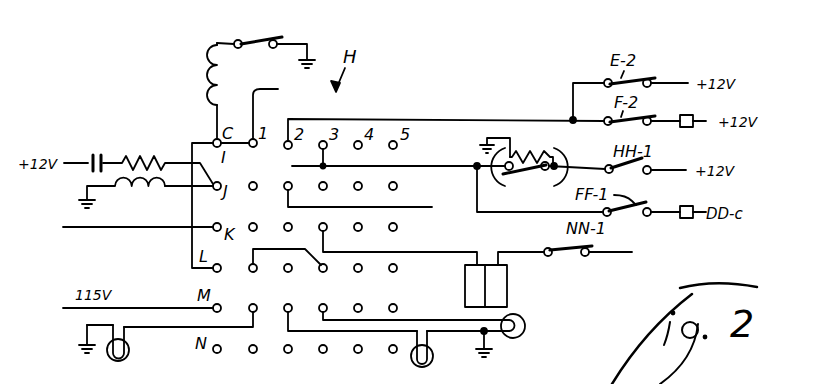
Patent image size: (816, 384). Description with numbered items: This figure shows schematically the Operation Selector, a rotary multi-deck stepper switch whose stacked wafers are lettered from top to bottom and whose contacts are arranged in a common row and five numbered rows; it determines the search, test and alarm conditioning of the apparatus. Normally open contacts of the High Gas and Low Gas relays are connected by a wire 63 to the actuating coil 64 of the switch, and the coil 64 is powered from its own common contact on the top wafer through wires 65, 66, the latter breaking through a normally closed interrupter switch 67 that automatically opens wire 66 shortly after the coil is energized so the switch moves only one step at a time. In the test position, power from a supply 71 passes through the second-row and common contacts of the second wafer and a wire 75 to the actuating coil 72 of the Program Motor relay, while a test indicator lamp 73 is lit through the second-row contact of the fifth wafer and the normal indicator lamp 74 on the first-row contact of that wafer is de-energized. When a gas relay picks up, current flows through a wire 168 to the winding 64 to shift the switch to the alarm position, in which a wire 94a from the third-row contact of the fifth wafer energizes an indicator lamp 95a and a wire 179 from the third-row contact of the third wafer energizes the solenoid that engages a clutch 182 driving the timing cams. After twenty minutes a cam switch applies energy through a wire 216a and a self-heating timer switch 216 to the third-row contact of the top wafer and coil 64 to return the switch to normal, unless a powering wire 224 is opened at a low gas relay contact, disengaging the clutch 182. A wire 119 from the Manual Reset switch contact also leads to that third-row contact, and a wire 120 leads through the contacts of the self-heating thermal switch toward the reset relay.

The wire 63 is at (279, 109).
The actuating coil 64 is at (210, 72).
The wire 65 is at (210, 105).
The circuit wire 66 is at (218, 43).
The interrupter switch 67 is at (253, 50).
The supply 71 is at (415, 206).
The actuating coil 72 is at (136, 192).
The wire 75 is at (178, 188).
The wire 119 is at (502, 212).
The wire 120 is at (292, 166).
The wire 168 is at (357, 119).
The wire 179 is at (430, 251).
The clutch 182 is at (507, 300).
The self-heating timer switch 216 is at (532, 148).
The wire 216a is at (446, 160).
The powering wire 224 is at (533, 257).
The test indicator lamp 73 is at (432, 365).
The normal indicator lamp 74 is at (130, 357).
The wire 94a is at (440, 320).
The indicator lamp 95a is at (525, 337).